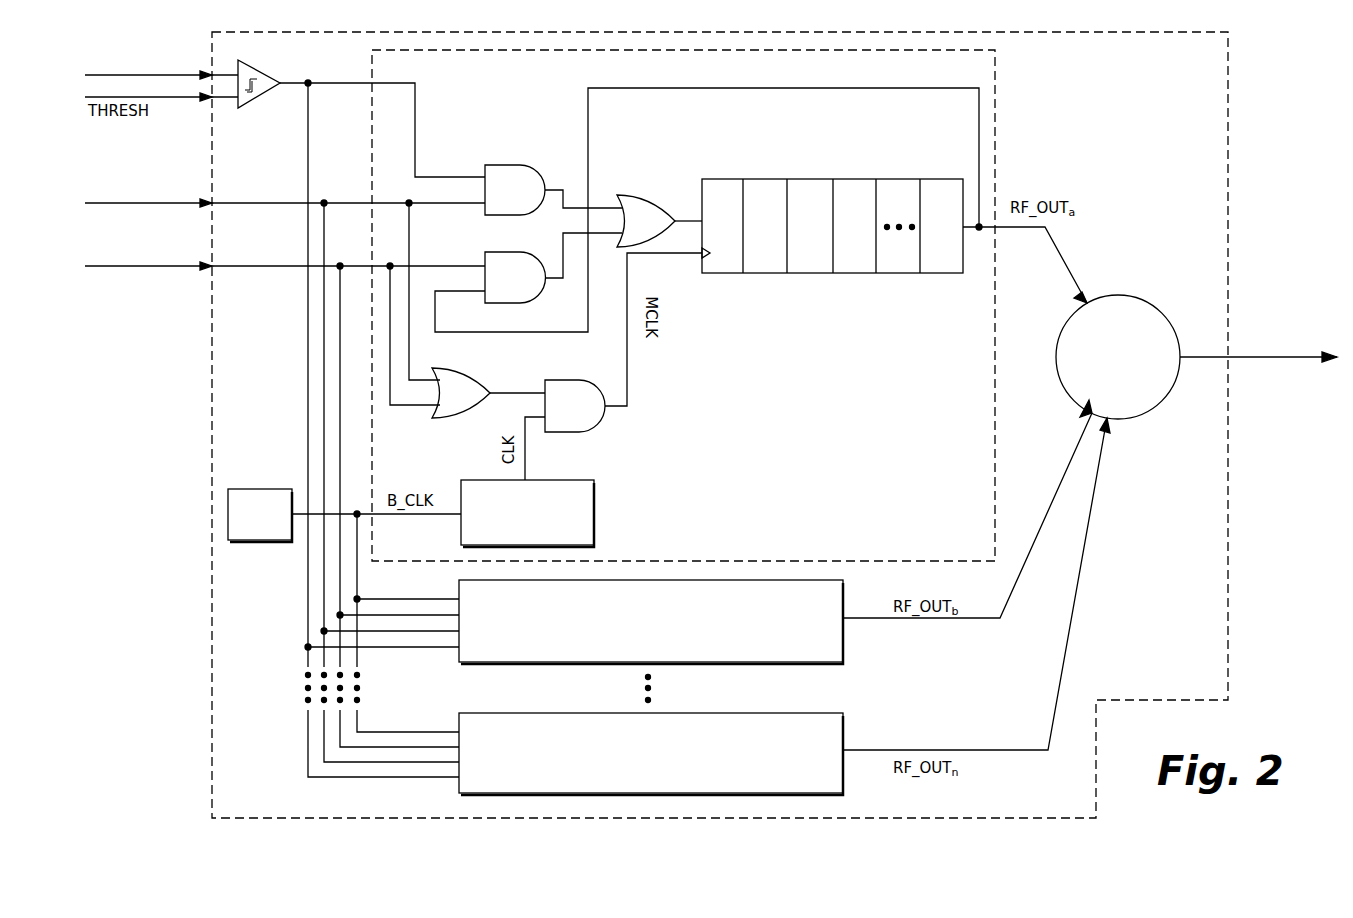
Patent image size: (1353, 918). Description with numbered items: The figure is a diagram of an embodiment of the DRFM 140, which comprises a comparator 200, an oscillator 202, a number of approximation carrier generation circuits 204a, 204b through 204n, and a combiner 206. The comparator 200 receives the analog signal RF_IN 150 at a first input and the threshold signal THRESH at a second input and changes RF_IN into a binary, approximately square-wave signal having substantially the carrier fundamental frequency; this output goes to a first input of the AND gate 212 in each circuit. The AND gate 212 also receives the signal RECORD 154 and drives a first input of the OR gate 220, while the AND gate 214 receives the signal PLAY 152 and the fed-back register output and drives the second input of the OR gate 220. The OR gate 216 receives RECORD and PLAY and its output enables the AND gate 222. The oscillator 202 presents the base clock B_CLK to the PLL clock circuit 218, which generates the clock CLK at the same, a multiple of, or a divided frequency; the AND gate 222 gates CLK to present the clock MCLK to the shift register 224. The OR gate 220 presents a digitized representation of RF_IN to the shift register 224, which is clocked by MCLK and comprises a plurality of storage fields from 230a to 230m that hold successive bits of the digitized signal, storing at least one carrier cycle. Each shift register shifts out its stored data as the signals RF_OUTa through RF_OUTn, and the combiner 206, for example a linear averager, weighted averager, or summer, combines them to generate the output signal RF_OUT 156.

The digital radio frequency memory (DRFM) 140 is at (210, 366).
The RF input signal 150 is at (210, 72).
The play signal 152 is at (210, 270).
The record signal 154 is at (210, 206).
The RF output signal 156 is at (1230, 358).
The comparator 200 is at (262, 100).
The oscillator 202 is at (255, 489).
The approximation carrier generation circuit 204a is at (997, 138).
The approximation carrier generation circuit 204b is at (843, 642).
The approximation carrier generation circuit 204n is at (843, 733).
The combiner 206 is at (1118, 295).
The AND gate 212 is at (505, 165).
The AND gate 214 is at (500, 252).
The OR gate 216 is at (455, 419).
The phase locked loop (PLL) clock circuit 218 is at (594, 516).
The OR gate 220 is at (632, 195).
The AND gate 222 is at (562, 380).
The shift register 224 is at (832, 208).
The storage field 230m is at (727, 225).
The storage field 230a is at (946, 226).